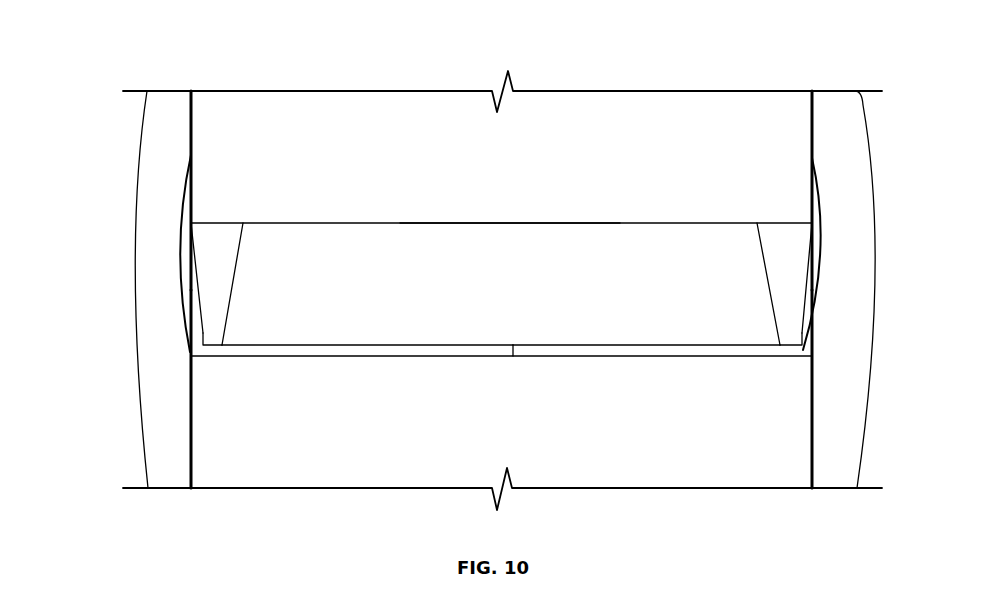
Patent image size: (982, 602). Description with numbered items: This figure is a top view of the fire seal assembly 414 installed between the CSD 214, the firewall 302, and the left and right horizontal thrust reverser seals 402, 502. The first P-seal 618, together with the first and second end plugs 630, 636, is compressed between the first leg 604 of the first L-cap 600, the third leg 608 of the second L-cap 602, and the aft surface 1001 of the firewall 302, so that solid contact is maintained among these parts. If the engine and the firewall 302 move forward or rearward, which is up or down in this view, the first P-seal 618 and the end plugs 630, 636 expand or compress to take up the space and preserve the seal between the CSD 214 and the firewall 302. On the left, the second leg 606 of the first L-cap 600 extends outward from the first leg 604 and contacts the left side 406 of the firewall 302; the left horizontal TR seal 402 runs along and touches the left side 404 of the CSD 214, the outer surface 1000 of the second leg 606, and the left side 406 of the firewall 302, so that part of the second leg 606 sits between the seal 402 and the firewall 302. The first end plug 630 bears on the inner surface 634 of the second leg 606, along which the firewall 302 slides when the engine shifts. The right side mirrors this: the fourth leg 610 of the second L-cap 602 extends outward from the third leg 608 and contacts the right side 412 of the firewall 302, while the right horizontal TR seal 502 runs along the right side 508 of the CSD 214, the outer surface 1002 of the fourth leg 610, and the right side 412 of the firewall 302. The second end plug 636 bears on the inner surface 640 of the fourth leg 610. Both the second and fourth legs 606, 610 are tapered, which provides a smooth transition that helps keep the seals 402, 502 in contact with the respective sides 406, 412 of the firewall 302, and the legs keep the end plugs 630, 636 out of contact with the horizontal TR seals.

The fire seal assembly 414 is at (123, 69).
The firewall 302 is at (342, 118).
The CSD 214 is at (243, 472).
The left side of the firewall 406 is at (192, 140).
The left side of the CSD 404 is at (188, 442).
The right side of the firewall 412 is at (815, 140).
The right side of the CSD 508 is at (812, 432).
The first horizontal TR seal 402 is at (148, 357).
The second horizontal TR seal 502 is at (857, 333).
The outer surface of the second leg 1000 is at (177, 247).
The outer surface of the fourth leg 1002 is at (825, 250).
The second leg 606 is at (192, 295).
The fourth leg 610 is at (815, 292).
The first P-seal 618 is at (437, 235).
The aft surface of the firewall 1001 is at (535, 224).
The first end plug 630 is at (227, 259).
The second end plug 636 is at (778, 268).
The inner surface of the second leg 634 is at (203, 317).
The inner surface of the fourth leg 640 is at (805, 310).
The first L-cap 600 is at (369, 348).
The first leg 604 is at (445, 348).
The second L-cap 602 is at (598, 348).
The third leg 608 is at (655, 348).